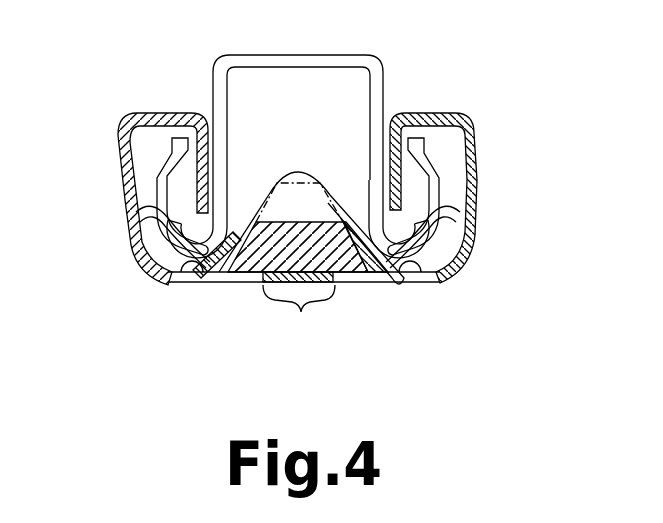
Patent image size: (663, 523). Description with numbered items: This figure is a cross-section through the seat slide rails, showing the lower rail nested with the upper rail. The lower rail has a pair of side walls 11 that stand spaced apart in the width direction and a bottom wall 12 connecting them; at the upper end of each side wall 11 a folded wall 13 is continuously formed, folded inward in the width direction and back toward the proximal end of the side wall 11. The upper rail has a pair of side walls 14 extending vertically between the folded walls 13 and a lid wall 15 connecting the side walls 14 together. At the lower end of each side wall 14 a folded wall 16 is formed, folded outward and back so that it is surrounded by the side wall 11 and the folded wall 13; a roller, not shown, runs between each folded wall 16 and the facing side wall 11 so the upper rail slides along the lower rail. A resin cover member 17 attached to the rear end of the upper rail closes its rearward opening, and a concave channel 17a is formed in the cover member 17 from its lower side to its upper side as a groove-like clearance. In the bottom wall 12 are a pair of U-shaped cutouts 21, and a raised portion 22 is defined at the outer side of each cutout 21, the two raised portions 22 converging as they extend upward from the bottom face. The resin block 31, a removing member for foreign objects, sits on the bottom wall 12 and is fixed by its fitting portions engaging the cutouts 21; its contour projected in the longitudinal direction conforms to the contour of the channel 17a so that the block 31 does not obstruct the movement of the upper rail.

The side wall 11 is at (120, 185).
The bottom wall 12 is at (230, 284).
The folded wall 13 is at (215, 177).
The side wall 14 is at (213, 82).
The lid wall 15 is at (277, 55).
The folded wall 16 is at (135, 213).
The cover member 17 is at (332, 78).
The channel 17a is at (294, 172).
The cutout 21 is at (299, 314).
The raised portion 22 is at (182, 278).
The block 31 is at (362, 268).